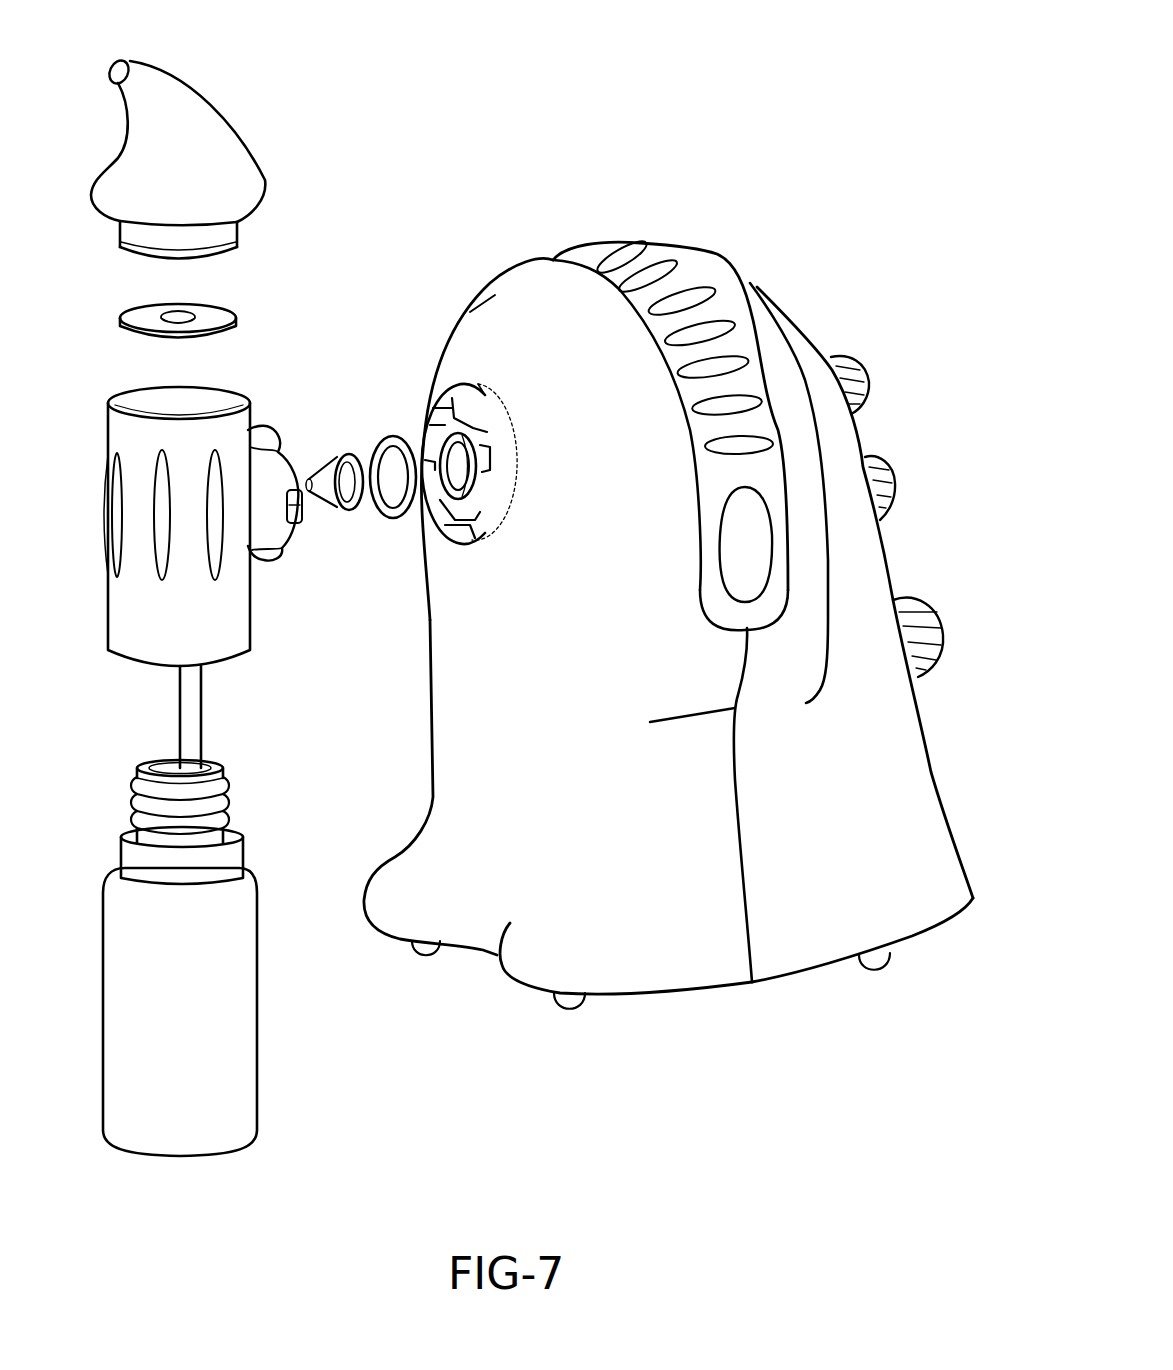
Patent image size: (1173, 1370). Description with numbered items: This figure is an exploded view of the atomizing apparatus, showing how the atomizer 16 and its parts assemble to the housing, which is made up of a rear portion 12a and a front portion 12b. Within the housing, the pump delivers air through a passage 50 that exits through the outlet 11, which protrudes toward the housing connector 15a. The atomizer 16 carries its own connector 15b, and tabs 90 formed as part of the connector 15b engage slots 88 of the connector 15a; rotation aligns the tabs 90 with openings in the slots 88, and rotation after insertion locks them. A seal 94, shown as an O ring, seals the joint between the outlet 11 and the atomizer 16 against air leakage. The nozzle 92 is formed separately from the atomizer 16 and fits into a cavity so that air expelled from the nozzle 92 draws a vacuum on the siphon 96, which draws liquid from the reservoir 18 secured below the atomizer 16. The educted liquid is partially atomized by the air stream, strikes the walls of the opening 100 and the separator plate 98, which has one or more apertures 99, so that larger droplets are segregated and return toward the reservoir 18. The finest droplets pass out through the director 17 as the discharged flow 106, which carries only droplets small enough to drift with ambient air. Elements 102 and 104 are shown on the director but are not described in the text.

The outlet 11 is at (480, 457).
The rear portion 12a is at (876, 892).
The front portion 12b is at (627, 913).
The connector 15a is at (485, 410).
The connector 15b is at (283, 543).
The atomizer 16 is at (210, 630).
The director 17 is at (203, 187).
The reservoir 18 is at (199, 1046).
The passage 50 is at (460, 467).
The slots 88 is at (470, 523).
The tabs 90 is at (297, 522).
The nozzle 92 is at (343, 454).
The seal 94 is at (386, 436).
The siphon 96 is at (192, 727).
The separator plate 98 is at (234, 314).
The apertures 99 is at (176, 316).
The opening 100 is at (207, 409).
The cap neck 102 is at (225, 230).
The cap rim 104 is at (240, 247).
The outlet flow 106 is at (120, 64).